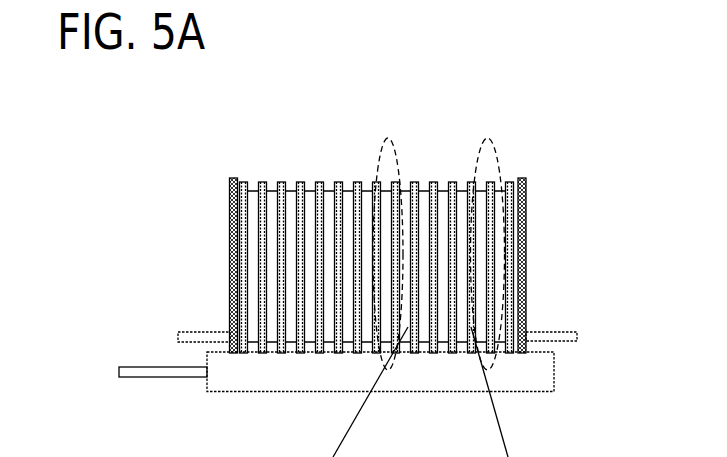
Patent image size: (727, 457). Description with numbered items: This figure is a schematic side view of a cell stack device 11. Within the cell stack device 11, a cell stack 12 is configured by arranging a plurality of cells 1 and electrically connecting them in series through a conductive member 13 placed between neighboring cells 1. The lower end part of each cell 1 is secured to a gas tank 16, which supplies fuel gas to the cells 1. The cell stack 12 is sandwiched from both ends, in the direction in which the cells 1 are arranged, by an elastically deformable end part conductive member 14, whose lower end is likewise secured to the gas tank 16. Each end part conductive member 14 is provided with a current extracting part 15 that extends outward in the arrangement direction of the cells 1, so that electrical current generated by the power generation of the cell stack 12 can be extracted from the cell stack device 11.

The cell 1 is at (432, 183).
The cell stack device 11 is at (247, 82).
The cell stack 12 is at (226, 165).
The conductive member 13 is at (327, 188).
The end part conductive member 14 is at (233, 273).
The current extracting part 15 is at (555, 337).
The gas tank 16 is at (538, 380).